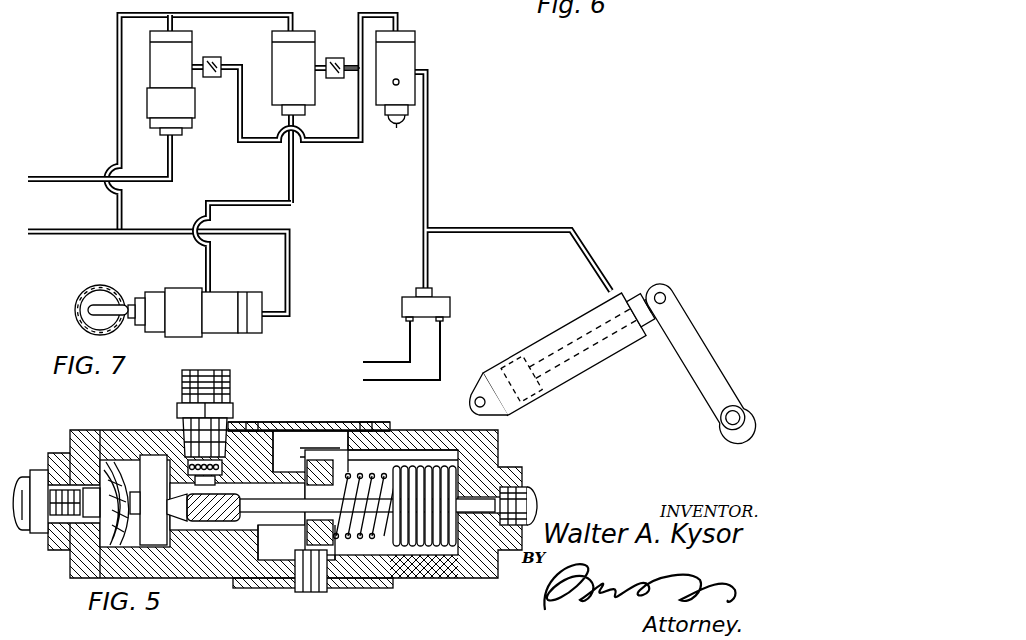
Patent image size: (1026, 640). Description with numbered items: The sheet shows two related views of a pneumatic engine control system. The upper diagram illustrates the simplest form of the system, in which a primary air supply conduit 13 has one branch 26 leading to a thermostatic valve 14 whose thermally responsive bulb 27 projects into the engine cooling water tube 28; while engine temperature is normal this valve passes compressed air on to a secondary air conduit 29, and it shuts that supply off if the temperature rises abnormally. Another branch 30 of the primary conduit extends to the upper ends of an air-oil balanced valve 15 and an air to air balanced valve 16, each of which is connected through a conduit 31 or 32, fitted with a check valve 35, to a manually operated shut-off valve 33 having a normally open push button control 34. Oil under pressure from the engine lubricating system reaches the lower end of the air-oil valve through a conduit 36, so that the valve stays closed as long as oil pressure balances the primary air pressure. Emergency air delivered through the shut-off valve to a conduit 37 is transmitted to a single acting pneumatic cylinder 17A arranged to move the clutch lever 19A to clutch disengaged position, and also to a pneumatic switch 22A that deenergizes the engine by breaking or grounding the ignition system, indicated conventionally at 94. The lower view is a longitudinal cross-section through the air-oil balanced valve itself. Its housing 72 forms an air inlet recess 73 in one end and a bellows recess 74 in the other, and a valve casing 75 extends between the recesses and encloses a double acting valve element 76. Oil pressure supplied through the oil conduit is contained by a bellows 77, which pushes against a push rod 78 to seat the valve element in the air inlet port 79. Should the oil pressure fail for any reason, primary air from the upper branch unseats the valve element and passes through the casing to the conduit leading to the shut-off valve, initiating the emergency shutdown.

In FIG. 7, the primary air supply conduit 13 is at (55, 235).
In FIG. 7, the thermostatic valve 14 is at (223, 297).
In FIG. 7, the air-oil balanced valve 15 is at (157, 55).
In FIG. 5, the air-oil balanced valve 15 is at (478, 581).
In FIG. 7, the air to air balanced valve 16 is at (277, 68).
In FIG. 7, the single acting pneumatic cylinder 17A is at (597, 356).
In FIG. 7, the clutch lever 19A is at (700, 341).
In FIG. 7, the pneumatic switch 22A is at (401, 302).
In FIG. 7, the branch conduit 26 is at (160, 227).
In FIG. 7, the thermally responsive bulb 27 is at (104, 308).
In FIG. 7, the cooling water tube 28 is at (95, 285).
In FIG. 7, the secondary air conduit 29 is at (294, 173).
In FIG. 5, the branch conduit 30 is at (27, 533).
In FIG. 7, the conduit 31 is at (240, 96).
In FIG. 5, the conduit 31 is at (232, 411).
In FIG. 7, the conduit 32 is at (352, 76).
In FIG. 7, the manually operated shut-off valve 33 is at (406, 62).
In FIG. 7, the push button control 34 is at (395, 119).
In FIG. 7, the check valve 35 is at (213, 58).
In FIG. 7, the oil conduit 36 is at (80, 173).
In FIG. 5, the oil conduit 36 is at (528, 486).
In FIG. 7, the conduit 37 is at (421, 176).
In FIG. 5, the housing 72 is at (392, 436).
In FIG. 5, the air inlet recess 73 is at (143, 447).
In FIG. 5, the bellows recess 74 is at (407, 458).
In FIG. 5, the valve casing 75 is at (262, 487).
In FIG. 5, the double acting valve element 76 is at (213, 512).
In FIG. 5, the bellows 77 is at (435, 534).
In FIG. 5, the push rod 78 is at (381, 536).
In FIG. 5, the air inlet port 79 is at (167, 500).
In FIG. 7, the ignition system 94 is at (410, 335).